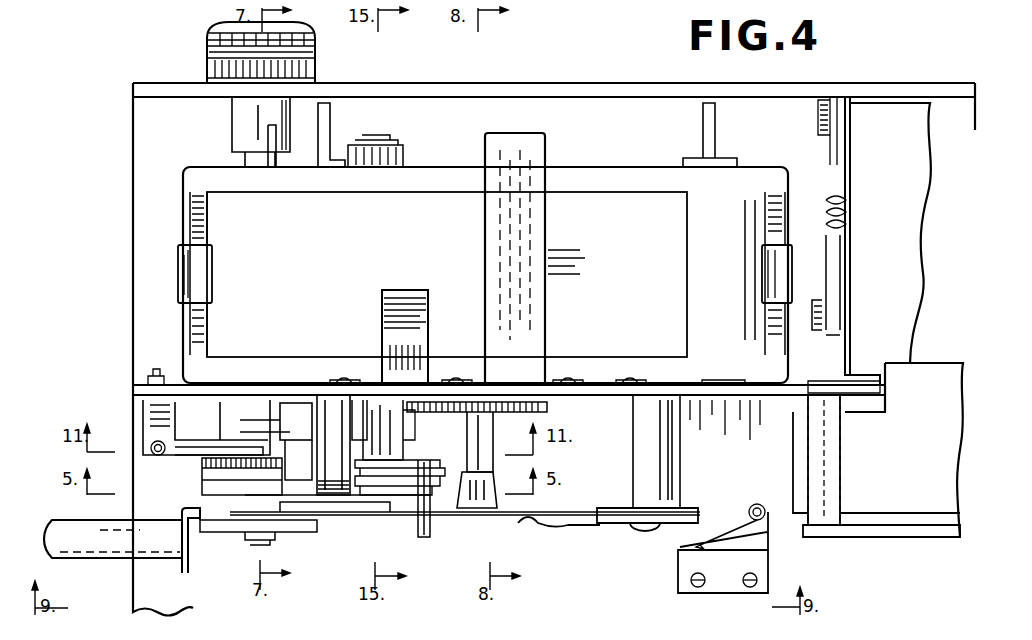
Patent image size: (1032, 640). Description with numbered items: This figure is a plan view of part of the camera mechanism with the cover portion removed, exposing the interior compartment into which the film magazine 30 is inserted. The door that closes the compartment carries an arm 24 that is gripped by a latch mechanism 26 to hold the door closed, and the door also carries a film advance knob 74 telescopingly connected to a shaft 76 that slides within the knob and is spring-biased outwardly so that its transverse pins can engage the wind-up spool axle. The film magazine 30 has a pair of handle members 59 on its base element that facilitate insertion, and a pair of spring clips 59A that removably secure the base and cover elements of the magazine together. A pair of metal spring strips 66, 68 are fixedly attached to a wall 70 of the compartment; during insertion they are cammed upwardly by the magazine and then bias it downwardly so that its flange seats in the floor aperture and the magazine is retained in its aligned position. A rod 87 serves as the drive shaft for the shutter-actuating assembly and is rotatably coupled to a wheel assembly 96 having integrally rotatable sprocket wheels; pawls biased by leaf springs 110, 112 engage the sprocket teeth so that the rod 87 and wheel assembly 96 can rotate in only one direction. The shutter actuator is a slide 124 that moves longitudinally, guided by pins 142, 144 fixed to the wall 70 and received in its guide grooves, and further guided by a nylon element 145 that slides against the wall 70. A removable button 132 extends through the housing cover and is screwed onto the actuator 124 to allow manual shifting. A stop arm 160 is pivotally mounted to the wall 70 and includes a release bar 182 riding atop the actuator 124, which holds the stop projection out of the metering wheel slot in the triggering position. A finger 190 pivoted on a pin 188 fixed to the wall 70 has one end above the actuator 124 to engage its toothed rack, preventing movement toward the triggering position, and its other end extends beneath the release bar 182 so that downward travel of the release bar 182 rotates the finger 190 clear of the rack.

The arm 24 is at (840, 160).
The latch mechanism 26 is at (842, 230).
The film magazine 30 is at (334, 297).
The handle members 59 is at (331, 112).
The spring clips 59A is at (180, 276).
The metal spring strip 66 is at (540, 316).
The metal spring strip 68 is at (430, 318).
The wall 70 is at (618, 400).
The film advance knob 74 is at (316, 67).
The shaft 76 is at (246, 165).
The rod 87 is at (260, 540).
The wheel assembly 96 is at (199, 468).
The leaf spring 110 is at (213, 440).
The leaf spring 112 is at (190, 455).
The actuator slide 124 is at (492, 512).
The removable button 132 is at (122, 552).
The pin 142 is at (308, 427).
The pin 144 is at (650, 440).
The nylon element 145 is at (495, 435).
The stop arm 160 is at (403, 460).
The release bar 182 is at (416, 538).
The pin 188 is at (336, 470).
The finger 190 is at (375, 500).